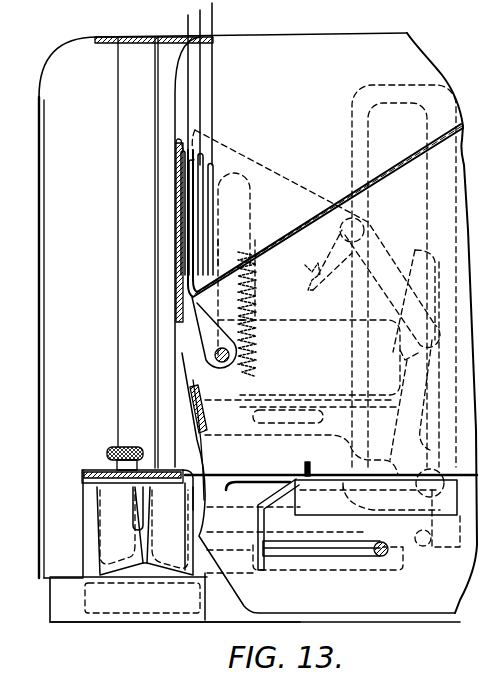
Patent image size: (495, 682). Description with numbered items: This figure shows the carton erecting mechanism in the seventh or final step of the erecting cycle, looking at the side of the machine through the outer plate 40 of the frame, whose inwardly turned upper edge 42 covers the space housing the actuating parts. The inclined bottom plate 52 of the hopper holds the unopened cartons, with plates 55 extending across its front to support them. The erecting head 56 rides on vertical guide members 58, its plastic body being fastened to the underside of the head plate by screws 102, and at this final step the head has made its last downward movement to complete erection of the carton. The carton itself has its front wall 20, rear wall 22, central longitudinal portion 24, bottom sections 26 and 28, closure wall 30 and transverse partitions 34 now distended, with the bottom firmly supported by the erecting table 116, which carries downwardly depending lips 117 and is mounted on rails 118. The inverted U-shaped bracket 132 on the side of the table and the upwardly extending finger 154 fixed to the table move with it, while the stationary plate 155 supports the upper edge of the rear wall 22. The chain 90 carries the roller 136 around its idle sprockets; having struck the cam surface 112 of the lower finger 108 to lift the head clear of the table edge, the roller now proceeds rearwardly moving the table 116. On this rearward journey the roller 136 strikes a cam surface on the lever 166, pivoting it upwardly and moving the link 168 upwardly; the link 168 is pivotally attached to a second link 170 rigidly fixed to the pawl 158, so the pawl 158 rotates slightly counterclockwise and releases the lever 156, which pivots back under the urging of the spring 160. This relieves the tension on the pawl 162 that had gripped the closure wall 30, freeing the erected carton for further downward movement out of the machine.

The front wall 20 is at (83, 535).
The rear wall 22 is at (197, 573).
The central longitudinal portion 24 is at (138, 503).
The bottom section 26 is at (153, 570).
The bottom section 28 is at (120, 575).
The closure wall 30 is at (203, 67).
The transverse partitions 34 is at (107, 528).
The outer plate 40 is at (68, 55).
The inwardly turned upper edge 42 is at (108, 37).
The inclined bottom plate 52 is at (312, 211).
The plates 55 is at (175, 253).
The erecting head 56 is at (90, 500).
The guide members 58 is at (130, 384).
The chain 90 is at (307, 322).
The screws 102 is at (118, 447).
The lower finger 108 is at (345, 568).
The cam surface 112 is at (363, 519).
The erecting table 116 is at (244, 481).
The downwardly depending lips 117 is at (253, 533).
The rails 118 is at (327, 553).
The inverted U-shaped bracket 132 is at (360, 86).
The roller 136 is at (418, 557).
The upwardly extending finger 154 is at (307, 462).
The stationary plate 155 is at (203, 402).
The lever 156 is at (243, 253).
The pawl 158 is at (306, 290).
The spring 160 is at (243, 277).
The pawl 162 is at (226, 371).
The lever 166 is at (325, 399).
The link 168 is at (405, 359).
The link 170 is at (389, 274).